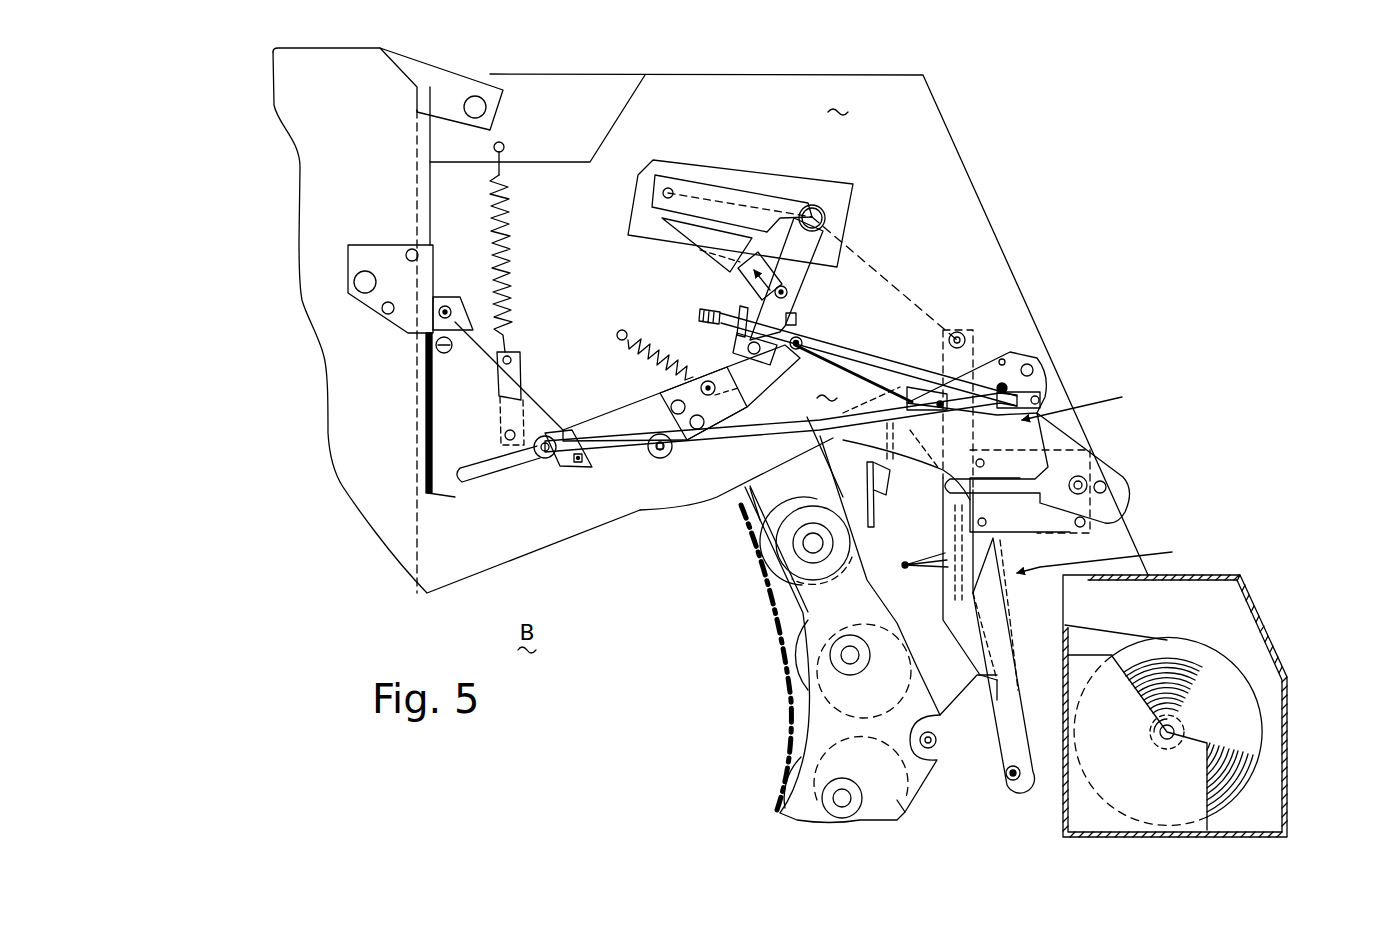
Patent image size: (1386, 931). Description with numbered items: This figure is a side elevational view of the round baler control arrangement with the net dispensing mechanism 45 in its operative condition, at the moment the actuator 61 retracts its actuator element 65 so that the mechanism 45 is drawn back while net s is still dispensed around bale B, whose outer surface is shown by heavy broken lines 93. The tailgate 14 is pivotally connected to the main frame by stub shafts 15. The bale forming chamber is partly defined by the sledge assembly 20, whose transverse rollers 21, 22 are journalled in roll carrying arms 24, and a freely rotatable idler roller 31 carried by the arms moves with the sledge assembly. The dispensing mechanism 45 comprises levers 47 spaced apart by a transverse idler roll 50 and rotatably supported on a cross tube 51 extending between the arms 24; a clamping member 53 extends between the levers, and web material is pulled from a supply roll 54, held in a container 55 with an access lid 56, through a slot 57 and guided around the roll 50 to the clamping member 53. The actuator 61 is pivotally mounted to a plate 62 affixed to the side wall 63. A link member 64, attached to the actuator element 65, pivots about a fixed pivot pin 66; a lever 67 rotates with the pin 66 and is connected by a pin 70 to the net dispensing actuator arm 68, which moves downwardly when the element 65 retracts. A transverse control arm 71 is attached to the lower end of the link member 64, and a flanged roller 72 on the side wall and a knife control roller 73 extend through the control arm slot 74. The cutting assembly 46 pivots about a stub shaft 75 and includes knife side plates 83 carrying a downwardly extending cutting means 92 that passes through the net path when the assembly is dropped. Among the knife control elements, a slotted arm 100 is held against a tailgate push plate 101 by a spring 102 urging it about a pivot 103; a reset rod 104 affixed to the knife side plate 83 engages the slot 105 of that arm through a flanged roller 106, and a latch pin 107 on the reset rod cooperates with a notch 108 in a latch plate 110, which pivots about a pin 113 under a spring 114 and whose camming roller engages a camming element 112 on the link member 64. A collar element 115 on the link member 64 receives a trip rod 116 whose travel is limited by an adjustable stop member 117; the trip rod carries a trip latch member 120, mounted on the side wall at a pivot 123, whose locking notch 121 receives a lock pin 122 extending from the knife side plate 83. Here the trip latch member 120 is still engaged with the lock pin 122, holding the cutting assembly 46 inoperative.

The tailgate 14 is at (268, 116).
The stub shafts 15 is at (481, 97).
The sledge assembly 20 is at (922, 817).
The roller 21 is at (780, 648).
The roller 22 is at (783, 756).
The roll carrying arms 24 is at (795, 725).
The idler roller 31 is at (778, 542).
The net dispensing mechanism 45 is at (1111, 556).
The net cutting assembly 46 is at (1091, 402).
The levers 47 is at (987, 753).
The idler roll 50 is at (1003, 713).
The cross tube 51 is at (937, 747).
The clamping member 53 is at (935, 560).
The supply roll 54 is at (1222, 650).
The container 55 is at (1285, 735).
The access lid 56 is at (1240, 575).
The slot 57 is at (1063, 608).
The actuator 61 is at (708, 237).
The plate 62 is at (718, 173).
The side wall 63 is at (837, 100).
The link member 64 is at (777, 233).
The actuator element 65 is at (745, 282).
The pivot pin 66 is at (814, 206).
The lever 67 is at (873, 250).
The net dispensing actuator arm 68 is at (965, 535).
The pin 70 is at (963, 333).
The control arm 71 is at (871, 407).
The flanged roller 72 is at (1093, 452).
The knife control roller 73 is at (1022, 525).
The control arm slot 74 is at (1122, 477).
The stub shaft 75 is at (965, 500).
The knife side plates 83 is at (812, 436).
The cutting means 92 is at (855, 497).
The heavy broken lines 93 is at (775, 625).
The slotted arm 100 is at (455, 410).
The tailgate push plate 101 is at (348, 265).
The spring 102 is at (495, 215).
The pivot 103 is at (436, 345).
The reset rod 104 is at (712, 440).
The slot 105 is at (470, 477).
The flanged roller 106 is at (545, 460).
The latch pin 107 is at (645, 445).
The notch 108 is at (660, 400).
The latch plate 110 is at (603, 418).
The camming element 112 is at (798, 330).
The pin 113 is at (704, 420).
The spring 114 is at (618, 332).
The collar element 115 is at (745, 335).
The trip rod 116 is at (897, 356).
The adjustable stop member 117 is at (698, 316).
The trip latch member 120 is at (1017, 362).
The locking notch 121 is at (997, 357).
The lock pin 122 is at (1045, 392).
The pivot 123 is at (1043, 358).